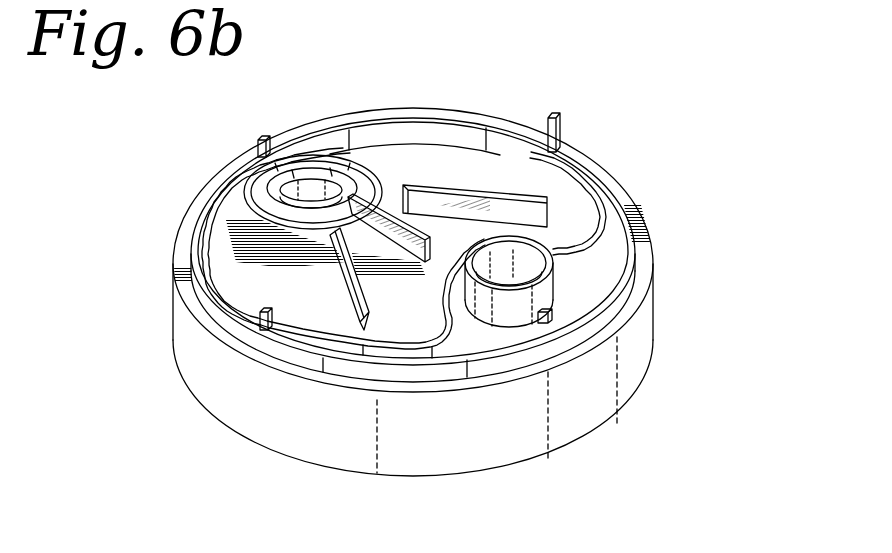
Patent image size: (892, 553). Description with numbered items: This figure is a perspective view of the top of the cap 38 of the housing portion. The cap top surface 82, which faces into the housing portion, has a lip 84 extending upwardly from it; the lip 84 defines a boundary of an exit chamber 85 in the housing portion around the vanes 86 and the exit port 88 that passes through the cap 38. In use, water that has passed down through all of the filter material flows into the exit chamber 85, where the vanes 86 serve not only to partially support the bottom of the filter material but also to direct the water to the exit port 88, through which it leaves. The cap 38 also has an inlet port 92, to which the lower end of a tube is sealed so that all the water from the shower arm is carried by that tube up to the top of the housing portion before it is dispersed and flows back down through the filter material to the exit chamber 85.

The cap 38 is at (665, 258).
The cap top surface 82 is at (447, 153).
The lip 84 is at (416, 133).
The exit chamber 85 is at (262, 276).
The vanes 86 is at (517, 207).
The exit port 88 is at (320, 172).
The inlet port 92 is at (595, 262).